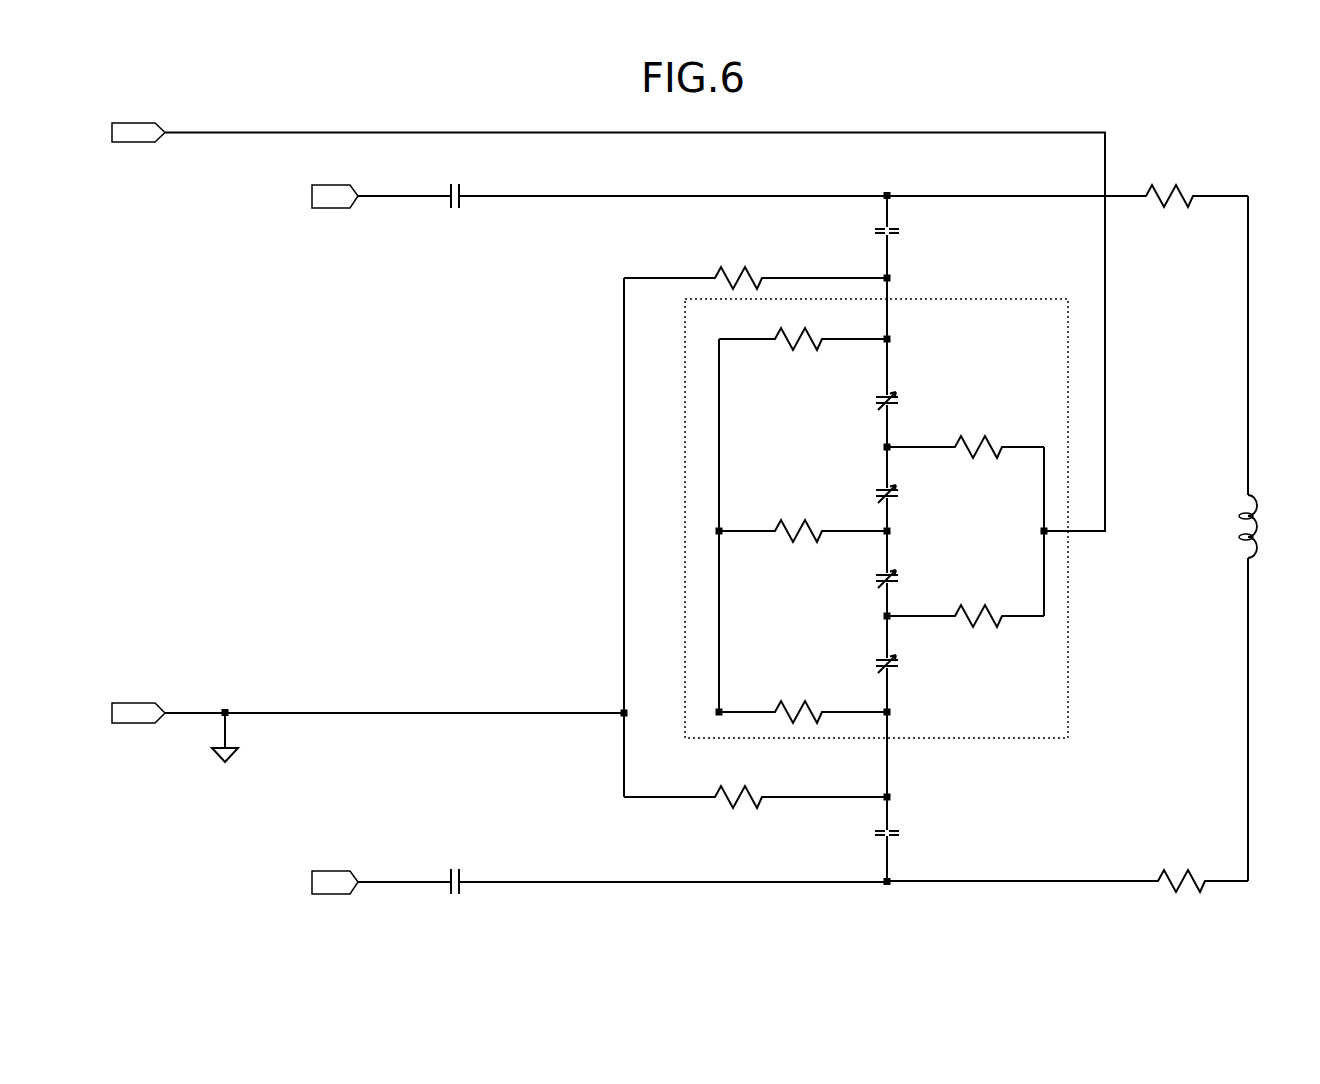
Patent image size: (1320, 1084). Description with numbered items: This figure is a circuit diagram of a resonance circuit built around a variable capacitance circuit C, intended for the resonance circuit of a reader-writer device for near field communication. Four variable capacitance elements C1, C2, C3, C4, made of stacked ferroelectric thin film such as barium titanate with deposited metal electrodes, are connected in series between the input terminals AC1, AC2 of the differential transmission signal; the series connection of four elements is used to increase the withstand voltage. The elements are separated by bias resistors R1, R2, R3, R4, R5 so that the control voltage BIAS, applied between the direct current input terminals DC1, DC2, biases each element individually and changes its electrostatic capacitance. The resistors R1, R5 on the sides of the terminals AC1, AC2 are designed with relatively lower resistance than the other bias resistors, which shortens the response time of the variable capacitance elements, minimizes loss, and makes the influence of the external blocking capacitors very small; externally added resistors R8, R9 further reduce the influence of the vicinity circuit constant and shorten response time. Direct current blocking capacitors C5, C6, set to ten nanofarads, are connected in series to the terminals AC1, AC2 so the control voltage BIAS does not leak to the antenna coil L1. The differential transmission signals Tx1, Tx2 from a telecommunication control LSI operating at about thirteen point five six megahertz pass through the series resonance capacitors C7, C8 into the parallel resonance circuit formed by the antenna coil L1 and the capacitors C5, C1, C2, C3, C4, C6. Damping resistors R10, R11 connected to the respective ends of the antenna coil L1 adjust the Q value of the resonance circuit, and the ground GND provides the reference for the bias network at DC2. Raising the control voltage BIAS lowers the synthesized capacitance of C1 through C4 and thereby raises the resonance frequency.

The control voltage BIAS is at (608, 327).
The differential transmission signal Tx1 is at (381, 196).
The differential transmission signal Tx2 is at (381, 882).
The ground terminal GND is at (368, 732).
The resonance capacitor C7 is at (665, 185).
The resonance capacitor C8 is at (665, 871).
The direct current blocking capacitor C5 is at (895, 220).
The direct current blocking capacitor C6 is at (873, 835).
The variable capacitance element C1 is at (894, 393).
The variable capacitance element C2 is at (894, 486).
The variable capacitance element C3 is at (894, 571).
The variable capacitance element C4 is at (894, 656).
The variable capacitance circuit C is at (876, 518).
The bias resistor R1 is at (805, 331).
The bias resistor R2 is at (964, 439).
The bias resistor R3 is at (803, 523).
The bias resistor R4 is at (964, 608).
The bias resistor R5 is at (803, 704).
The externally added resistor R8 is at (757, 270).
The externally added resistor R9 is at (757, 789).
The damping resistor R10 is at (1067, 188).
The damping resistor R11 is at (1067, 873).
The antenna coil L1 is at (1260, 538).
The input terminal AC1 is at (887, 186).
The input terminal AC2 is at (887, 893).
The direct current input terminal DC1 is at (1075, 543).
The direct current input terminal DC2 is at (649, 723).